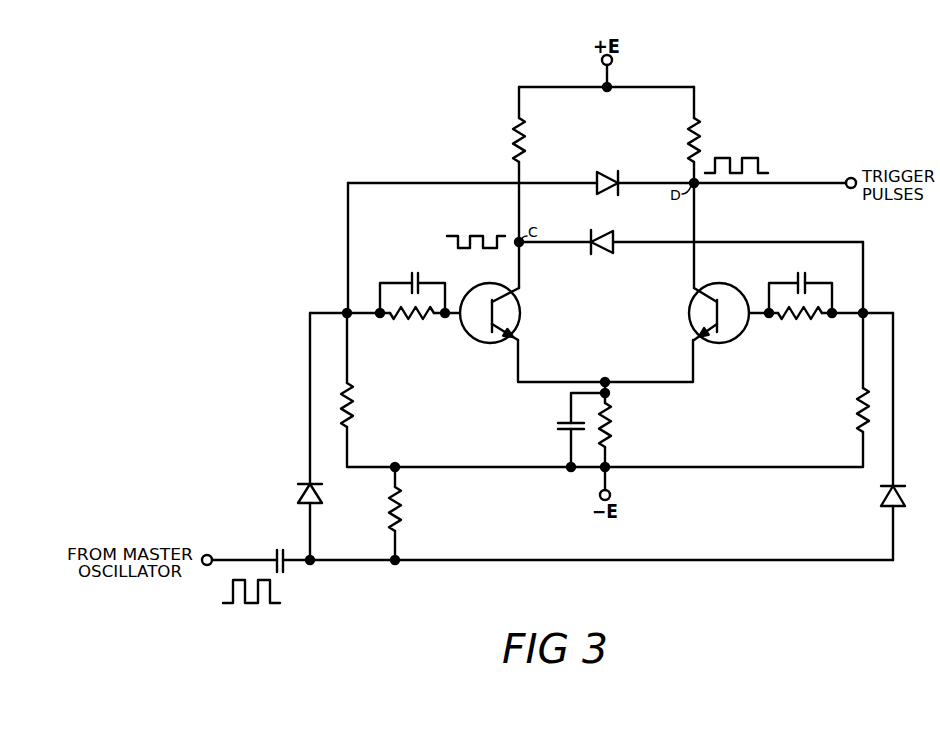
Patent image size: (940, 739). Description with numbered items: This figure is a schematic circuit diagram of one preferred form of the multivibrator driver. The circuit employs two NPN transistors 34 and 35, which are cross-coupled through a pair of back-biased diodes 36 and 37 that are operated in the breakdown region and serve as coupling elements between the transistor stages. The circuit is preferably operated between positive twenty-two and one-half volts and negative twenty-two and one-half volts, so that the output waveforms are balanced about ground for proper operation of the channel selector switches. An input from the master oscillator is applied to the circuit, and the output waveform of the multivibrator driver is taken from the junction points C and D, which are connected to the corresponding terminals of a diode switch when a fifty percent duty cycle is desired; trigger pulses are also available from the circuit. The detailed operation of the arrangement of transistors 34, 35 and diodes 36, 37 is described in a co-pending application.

The NPN transistor 34 is at (521, 313).
The NPN transistor 35 is at (690, 304).
The back-biased diode 36 is at (613, 237).
The back-biased diode 37 is at (606, 178).